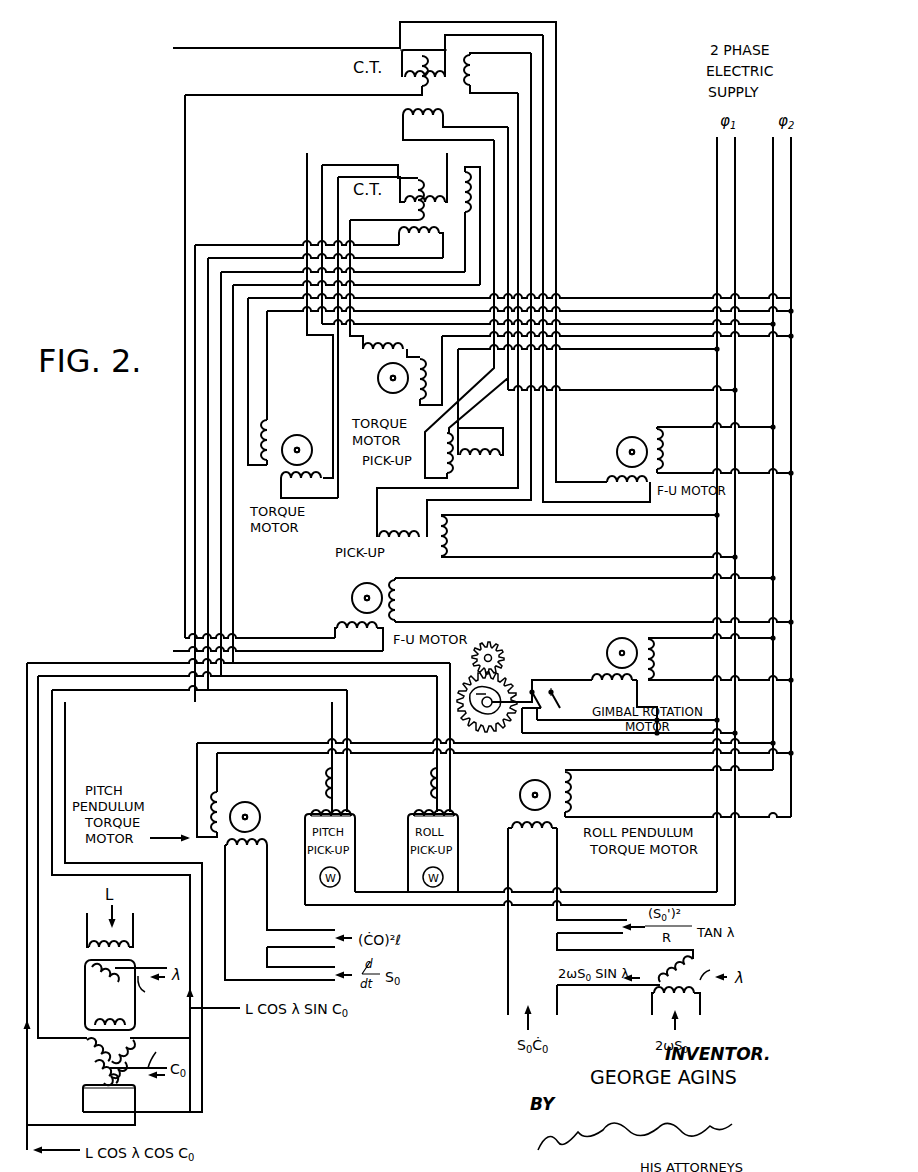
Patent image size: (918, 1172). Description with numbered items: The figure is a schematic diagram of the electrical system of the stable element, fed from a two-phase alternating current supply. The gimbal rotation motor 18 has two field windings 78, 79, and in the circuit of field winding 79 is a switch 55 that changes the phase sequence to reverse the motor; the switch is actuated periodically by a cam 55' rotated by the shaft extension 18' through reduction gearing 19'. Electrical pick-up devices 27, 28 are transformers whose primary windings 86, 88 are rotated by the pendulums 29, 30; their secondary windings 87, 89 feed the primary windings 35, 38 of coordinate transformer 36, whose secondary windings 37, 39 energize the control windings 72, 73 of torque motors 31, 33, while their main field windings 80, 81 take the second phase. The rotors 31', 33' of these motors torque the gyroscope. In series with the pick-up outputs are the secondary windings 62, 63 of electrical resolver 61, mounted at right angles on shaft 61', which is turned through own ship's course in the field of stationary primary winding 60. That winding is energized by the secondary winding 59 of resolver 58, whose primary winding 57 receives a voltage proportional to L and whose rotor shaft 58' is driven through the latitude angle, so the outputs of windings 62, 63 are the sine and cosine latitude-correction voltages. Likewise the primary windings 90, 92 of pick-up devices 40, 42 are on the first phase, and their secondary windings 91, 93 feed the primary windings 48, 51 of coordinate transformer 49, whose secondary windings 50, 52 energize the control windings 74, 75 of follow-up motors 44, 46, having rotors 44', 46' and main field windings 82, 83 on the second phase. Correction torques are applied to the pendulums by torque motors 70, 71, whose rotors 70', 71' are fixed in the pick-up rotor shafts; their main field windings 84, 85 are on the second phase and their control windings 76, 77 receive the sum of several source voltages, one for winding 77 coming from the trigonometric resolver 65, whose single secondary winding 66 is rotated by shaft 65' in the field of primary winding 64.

The gimbal rotation motor 18 is at (629, 633).
The shaft extension 18' is at (500, 655).
The reduction gearing 19' is at (500, 697).
The electrical pick-up device 27 is at (352, 800).
The electrical pick-up device 28 is at (456, 800).
The pendulum 29 is at (340, 877).
The pendulum 30 is at (443, 877).
The torque motor 31 is at (393, 389).
The rotor 31' is at (373, 387).
The torque motor 33 is at (294, 434).
The rotor 33' is at (312, 435).
The primary winding 35 is at (419, 243).
The coordinate transformer 36 is at (390, 232).
The secondary winding 37 is at (397, 203).
The primary winding 38 is at (470, 172).
The secondary winding 39 is at (424, 212).
The electrical pick-up device 40 is at (429, 562).
The electrical pick-up device 42 is at (471, 469).
The follow-up motor 44 is at (375, 585).
The rotor 44' is at (345, 590).
The follow-up motor 46 is at (639, 433).
The rotor 46' is at (615, 437).
The primary winding 48 is at (474, 71).
The coordinate transformer 49 is at (396, 103).
The secondary winding 50 is at (424, 60).
The primary winding 51 is at (423, 123).
The secondary winding 52 is at (430, 80).
The switch 55 is at (562, 702).
The cam 55' is at (478, 713).
The primary winding 57 is at (132, 944).
The electrical resolver 58 is at (127, 990).
The rotor shaft 58' is at (153, 989).
The secondary winding 59 is at (104, 977).
The primary winding 60 is at (108, 1022).
The electrical resolver 61 is at (88, 1075).
The shaft 61' is at (162, 1053).
The secondary winding 62 is at (109, 1100).
The secondary winding 63 is at (95, 1050).
The primary winding 64 is at (672, 1003).
The electromechanical trigonometric resolver 65 is at (698, 1002).
The shaft 65' is at (717, 964).
The secondary winding 66 is at (673, 975).
The torque motor 70 is at (245, 801).
The rotor 70' is at (265, 806).
The torque motor 71 is at (537, 781).
The rotor 71' is at (516, 792).
The control winding 72 is at (378, 357).
The control winding 73 is at (296, 480).
The control winding 74 is at (357, 638).
The control winding 75 is at (616, 480).
The control winding 76 is at (250, 851).
The control winding 77 is at (537, 842).
The field winding 78 is at (652, 660).
The field winding 79 is at (600, 676).
The main field winding 80 is at (425, 370).
The main field winding 81 is at (265, 462).
The main field winding 82 is at (399, 597).
The main field winding 83 is at (661, 452).
The main field winding 84 is at (210, 811).
The main field winding 85 is at (570, 798).
The primary winding 86 is at (357, 803).
The secondary winding 87 is at (328, 781).
The primary winding 88 is at (429, 812).
The secondary winding 89 is at (431, 789).
The primary winding 90 is at (446, 538).
The secondary winding 91 is at (399, 525).
The primary winding 92 is at (478, 455).
The secondary winding 93 is at (440, 466).